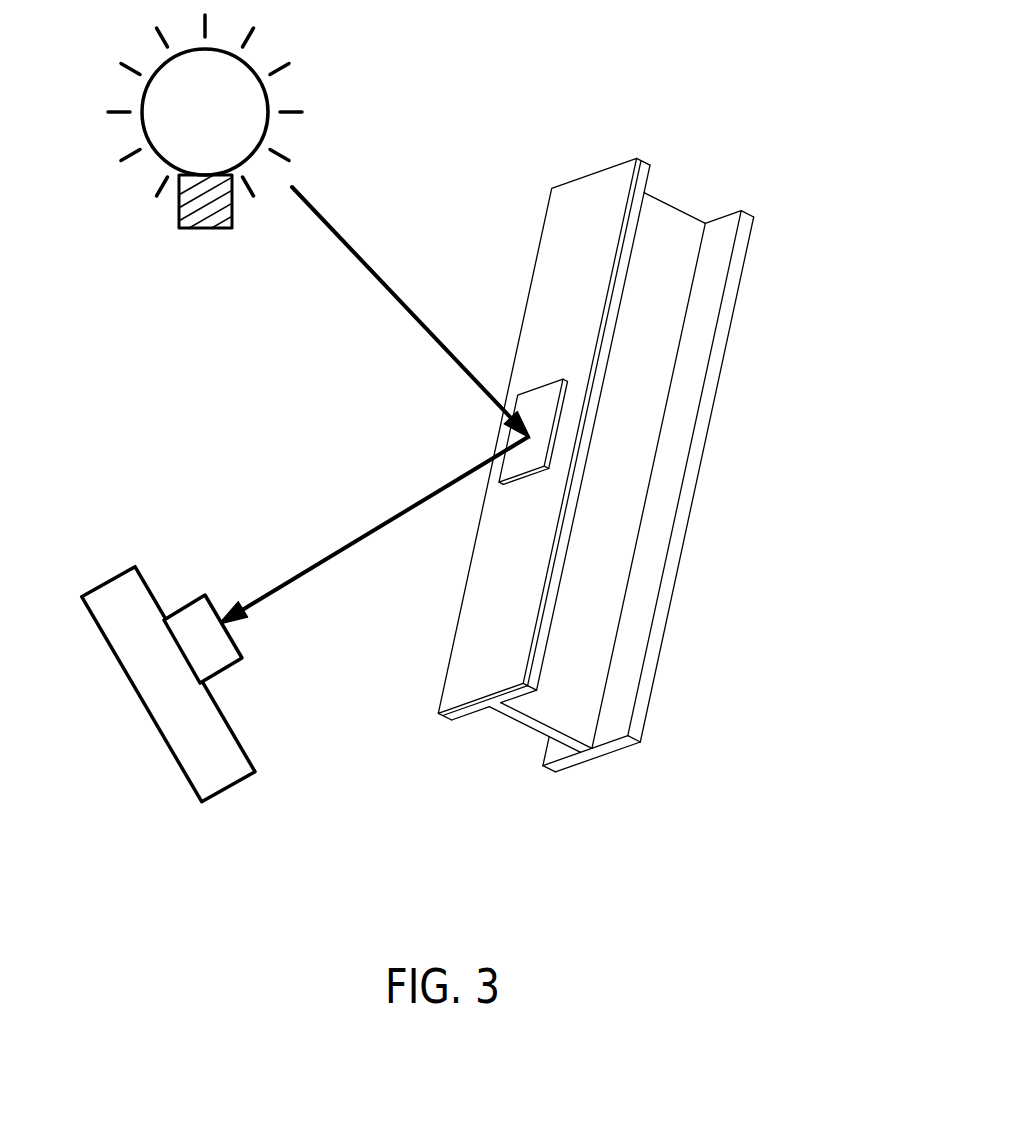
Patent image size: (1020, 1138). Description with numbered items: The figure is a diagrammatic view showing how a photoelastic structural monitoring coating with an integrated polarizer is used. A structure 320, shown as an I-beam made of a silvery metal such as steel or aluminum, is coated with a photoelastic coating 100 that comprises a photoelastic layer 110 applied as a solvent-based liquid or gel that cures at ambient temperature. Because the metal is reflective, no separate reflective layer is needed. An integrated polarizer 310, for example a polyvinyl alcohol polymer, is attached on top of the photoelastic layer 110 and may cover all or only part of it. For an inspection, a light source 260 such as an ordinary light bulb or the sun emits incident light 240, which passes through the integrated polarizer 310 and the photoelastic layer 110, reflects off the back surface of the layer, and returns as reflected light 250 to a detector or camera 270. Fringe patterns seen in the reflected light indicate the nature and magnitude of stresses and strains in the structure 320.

The photoelastic coating 100 is at (486, 258).
The photoelastic layer 110 is at (567, 338).
The incident light 240 is at (362, 265).
The reflected light 250 is at (342, 550).
The light source 260 is at (268, 98).
The detector or camera 270 is at (193, 595).
The integrated polarizer 310 is at (541, 387).
The structure 320 is at (700, 462).